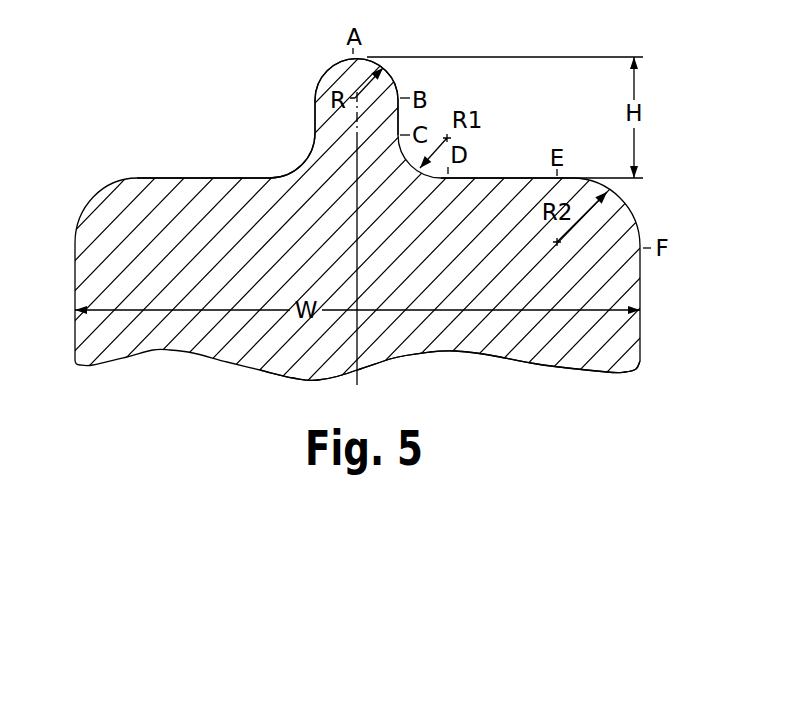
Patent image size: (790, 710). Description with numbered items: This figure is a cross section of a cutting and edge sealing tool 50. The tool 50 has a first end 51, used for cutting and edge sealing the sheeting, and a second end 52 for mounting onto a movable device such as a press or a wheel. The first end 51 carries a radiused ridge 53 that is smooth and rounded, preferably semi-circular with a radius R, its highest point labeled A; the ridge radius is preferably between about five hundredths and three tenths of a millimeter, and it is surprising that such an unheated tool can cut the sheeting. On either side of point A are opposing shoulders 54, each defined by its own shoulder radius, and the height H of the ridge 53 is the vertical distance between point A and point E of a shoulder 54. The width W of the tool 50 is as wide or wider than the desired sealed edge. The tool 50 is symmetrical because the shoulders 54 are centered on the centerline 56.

The tool 50 is at (683, 223).
The first end 51 is at (365, 58).
The second end 52 is at (607, 373).
The radiused ridge 53 is at (327, 126).
The opposing shoulders 54 is at (172, 178).
The centerline 56 is at (358, 351).